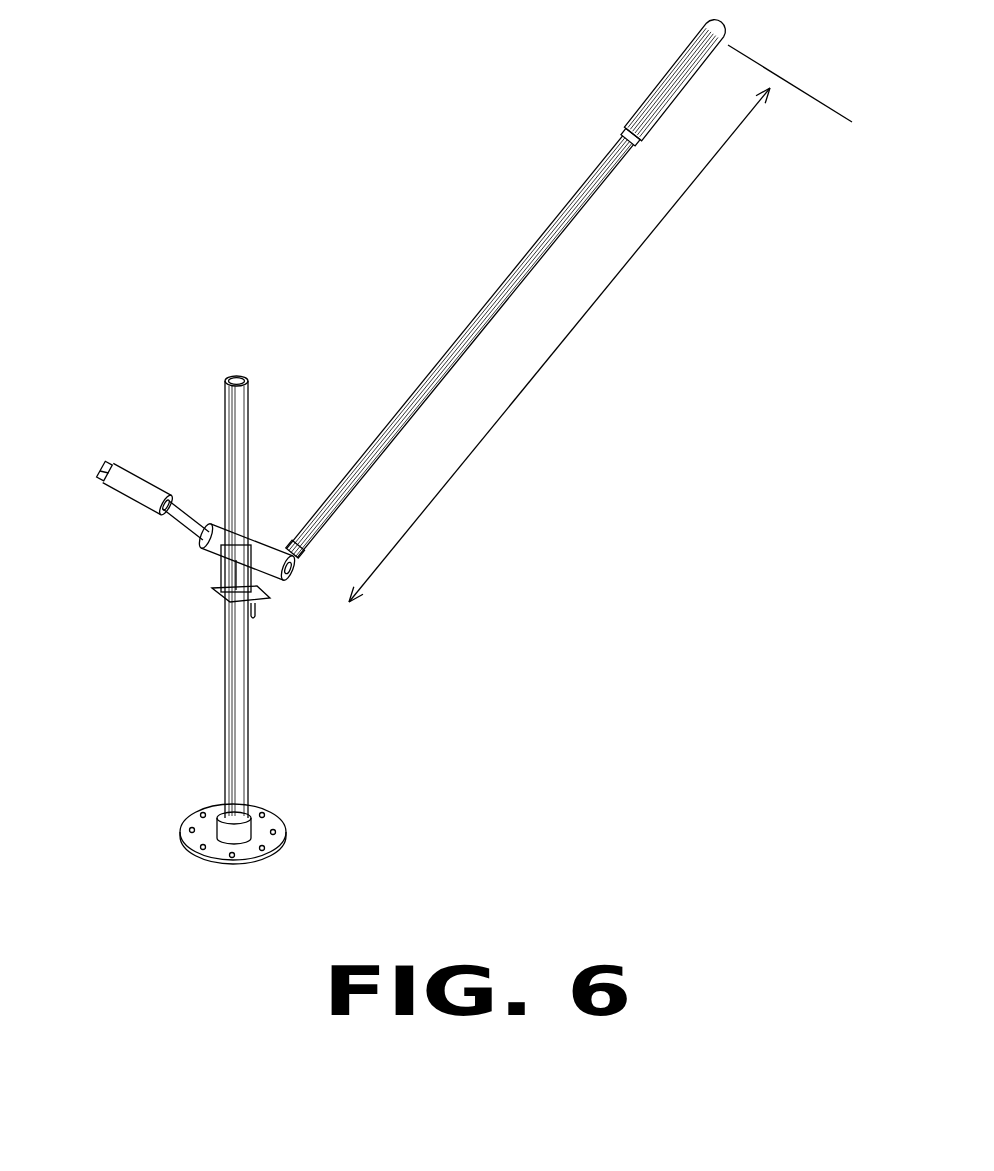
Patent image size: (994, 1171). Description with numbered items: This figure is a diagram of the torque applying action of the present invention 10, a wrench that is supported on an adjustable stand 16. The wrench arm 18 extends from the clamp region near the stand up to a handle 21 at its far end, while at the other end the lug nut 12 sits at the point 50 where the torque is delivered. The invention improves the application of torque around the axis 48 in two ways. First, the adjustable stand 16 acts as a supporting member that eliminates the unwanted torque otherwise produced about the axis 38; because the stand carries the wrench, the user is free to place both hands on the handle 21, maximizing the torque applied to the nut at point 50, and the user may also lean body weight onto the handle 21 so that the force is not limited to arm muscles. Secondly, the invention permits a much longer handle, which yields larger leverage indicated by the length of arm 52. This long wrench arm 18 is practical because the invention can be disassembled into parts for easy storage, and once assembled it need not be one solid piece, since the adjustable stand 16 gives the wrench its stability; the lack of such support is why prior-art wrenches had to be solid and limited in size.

The present invention 10 is at (638, 460).
The lug nut 12 is at (108, 466).
The adjustable stand 16 is at (242, 730).
The wrench arm 18 is at (452, 362).
The handle 21 is at (662, 60).
The axis 38 is at (120, 460).
The axis 48 is at (293, 583).
The point 50 is at (90, 478).
The length of arm 52 is at (600, 323).